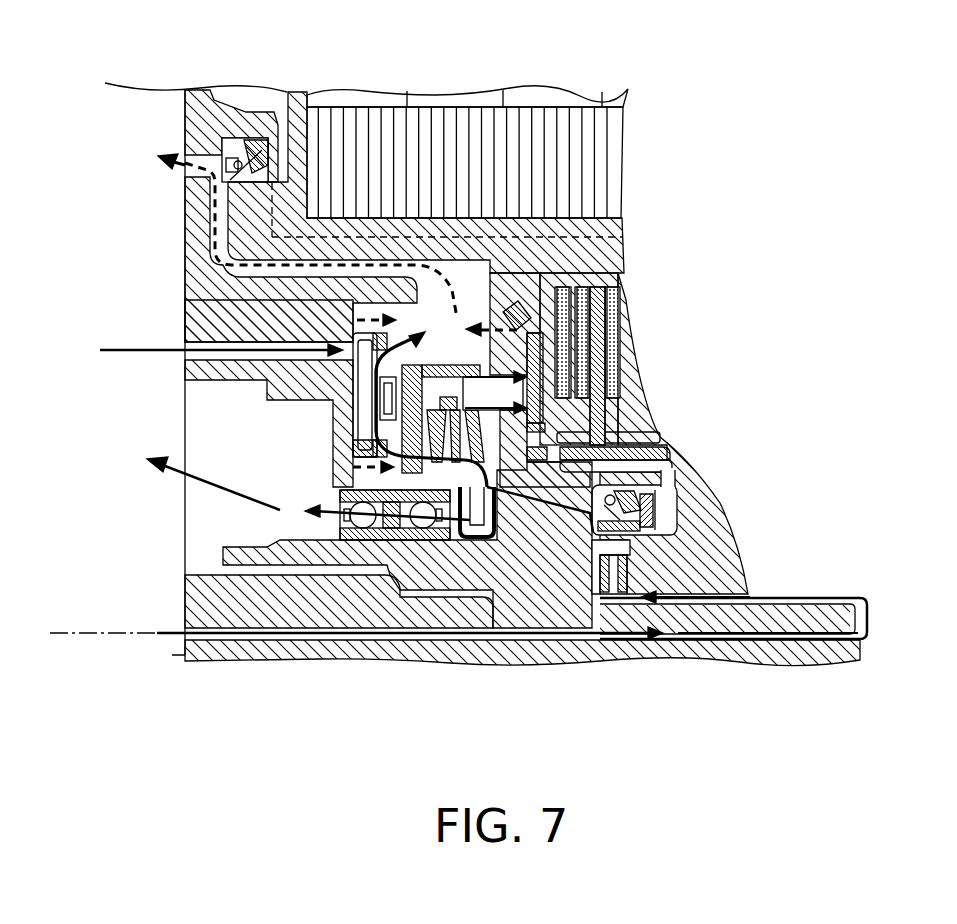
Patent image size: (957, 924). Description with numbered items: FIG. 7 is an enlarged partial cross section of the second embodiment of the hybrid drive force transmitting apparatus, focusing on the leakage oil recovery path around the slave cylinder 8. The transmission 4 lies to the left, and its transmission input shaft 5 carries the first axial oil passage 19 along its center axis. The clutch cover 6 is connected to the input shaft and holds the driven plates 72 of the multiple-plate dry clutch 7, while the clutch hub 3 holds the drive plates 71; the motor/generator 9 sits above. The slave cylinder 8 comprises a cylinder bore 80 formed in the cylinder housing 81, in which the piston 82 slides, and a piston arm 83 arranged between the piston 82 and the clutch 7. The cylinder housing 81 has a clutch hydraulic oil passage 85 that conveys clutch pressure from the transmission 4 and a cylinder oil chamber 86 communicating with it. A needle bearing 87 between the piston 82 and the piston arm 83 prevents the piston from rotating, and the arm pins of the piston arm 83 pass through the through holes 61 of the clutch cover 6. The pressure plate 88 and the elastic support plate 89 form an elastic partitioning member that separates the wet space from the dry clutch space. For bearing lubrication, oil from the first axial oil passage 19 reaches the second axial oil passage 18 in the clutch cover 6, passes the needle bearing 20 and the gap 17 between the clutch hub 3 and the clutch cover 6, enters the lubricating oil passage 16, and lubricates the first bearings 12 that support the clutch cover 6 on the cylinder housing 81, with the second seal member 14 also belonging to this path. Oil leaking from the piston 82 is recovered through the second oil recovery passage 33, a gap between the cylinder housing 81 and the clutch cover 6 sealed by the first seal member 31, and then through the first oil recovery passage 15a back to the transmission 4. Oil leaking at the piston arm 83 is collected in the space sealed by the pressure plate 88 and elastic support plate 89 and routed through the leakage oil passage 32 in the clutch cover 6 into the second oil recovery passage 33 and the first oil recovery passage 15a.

The clutch hub 3 is at (727, 501).
The transmission 4 is at (137, 112).
The transmission input shaft 5 is at (273, 661).
The clutch cover 6 is at (630, 246).
The multiple-plate dry clutch 7 is at (628, 317).
The slave cylinder 8 is at (184, 284).
The motor/generator 9 is at (625, 155).
The first bearings 12 is at (370, 482).
The second seal member 14 is at (657, 514).
The first oil recovery passage 15a is at (188, 178).
The lubricating oil passage 16 is at (540, 505).
The gap 17 is at (736, 605).
The second axial oil passage 18 is at (663, 637).
The first axial oil passage 19 is at (218, 660).
The needle bearing 20 is at (588, 605).
The first seal member 31 is at (247, 140).
The leakage oil passage 32 is at (500, 318).
The second oil recovery passage 33 is at (313, 275).
The through holes 61 is at (553, 413).
The drive plates 71 is at (623, 432).
The driven plates 72 is at (598, 303).
The cylinder bore 80 is at (396, 341).
The cylinder housing 81 is at (222, 320).
The piston 82 is at (367, 393).
The piston arm 83 is at (473, 387).
The clutch hydraulic oil passage 85 is at (375, 361).
The cylinder oil chamber 86 is at (353, 442).
The needle bearing 87 is at (361, 437).
The pressure plate 88 is at (475, 407).
The elastic support plate 89 is at (547, 433).